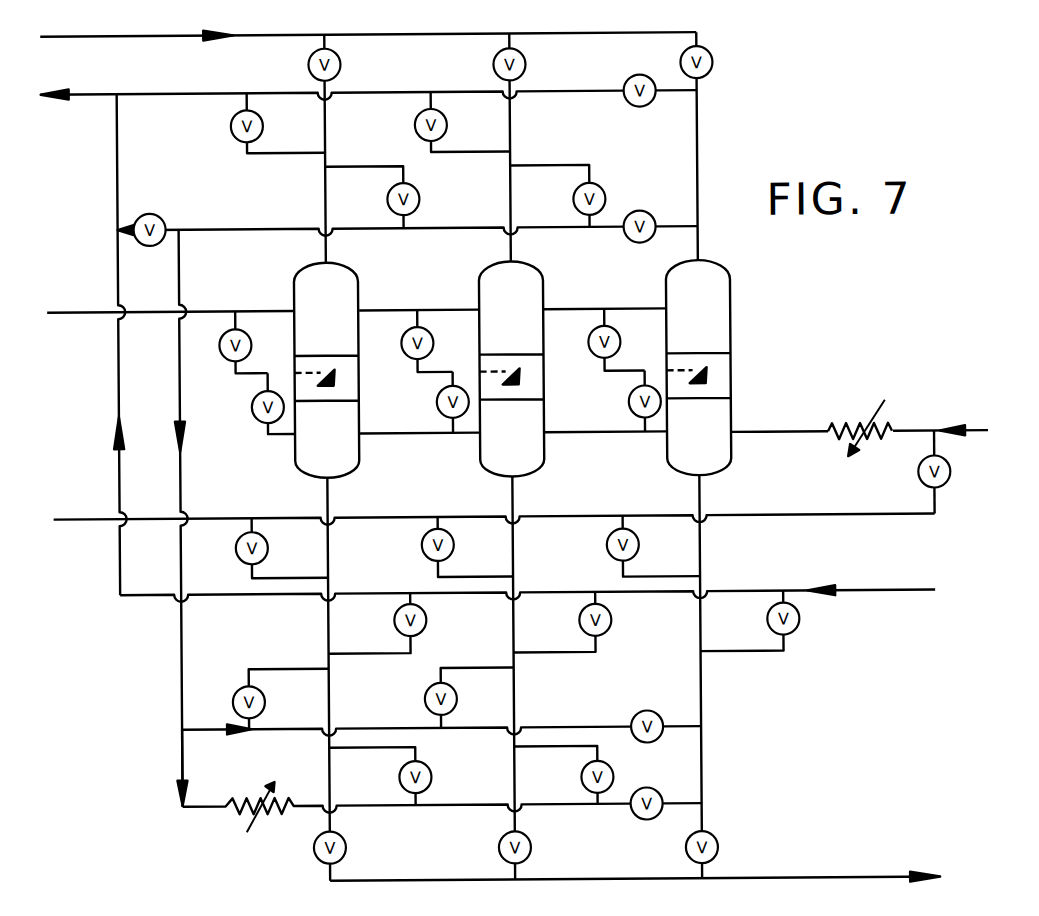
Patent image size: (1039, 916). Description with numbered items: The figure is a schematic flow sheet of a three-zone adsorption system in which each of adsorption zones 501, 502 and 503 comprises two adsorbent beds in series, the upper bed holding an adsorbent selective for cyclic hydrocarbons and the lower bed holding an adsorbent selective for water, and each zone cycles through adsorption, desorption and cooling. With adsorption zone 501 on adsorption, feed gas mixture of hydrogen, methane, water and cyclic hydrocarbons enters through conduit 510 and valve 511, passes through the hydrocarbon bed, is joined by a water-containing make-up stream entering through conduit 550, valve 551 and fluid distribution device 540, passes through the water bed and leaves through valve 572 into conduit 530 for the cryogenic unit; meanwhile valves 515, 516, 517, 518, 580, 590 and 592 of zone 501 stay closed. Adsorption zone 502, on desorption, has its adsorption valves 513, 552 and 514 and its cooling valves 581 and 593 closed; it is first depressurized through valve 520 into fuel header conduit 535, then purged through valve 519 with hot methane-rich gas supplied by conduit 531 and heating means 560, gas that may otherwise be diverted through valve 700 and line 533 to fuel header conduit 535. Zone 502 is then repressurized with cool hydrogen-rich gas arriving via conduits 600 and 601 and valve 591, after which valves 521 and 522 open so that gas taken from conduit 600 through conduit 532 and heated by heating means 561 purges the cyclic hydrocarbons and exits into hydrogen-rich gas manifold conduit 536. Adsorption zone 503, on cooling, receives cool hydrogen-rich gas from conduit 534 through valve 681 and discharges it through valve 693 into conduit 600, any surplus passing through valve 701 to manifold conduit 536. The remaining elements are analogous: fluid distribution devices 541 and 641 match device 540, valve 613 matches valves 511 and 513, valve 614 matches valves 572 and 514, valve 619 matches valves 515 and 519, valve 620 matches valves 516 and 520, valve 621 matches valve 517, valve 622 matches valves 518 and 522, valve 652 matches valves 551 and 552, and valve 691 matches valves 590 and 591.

The conduit 510 is at (185, 14).
The valve 511 is at (340, 62).
The valve 513 is at (525, 67).
The valve 613 is at (712, 66).
The hydrogen-rich gas manifold conduit 536 is at (82, 97).
The valve 518 is at (230, 128).
The valve 522 is at (414, 128).
The valve 622 is at (630, 105).
The conduit 600 is at (203, 229).
The valve 592 is at (418, 207).
The valve 593 is at (600, 188).
The valve 693 is at (646, 214).
The valve 701 is at (148, 247).
The adsorption zone 501 is at (286, 275).
The adsorption zone 502 is at (470, 282).
The adsorption zone 503 is at (654, 282).
The conduit 550 is at (82, 316).
The valve 551 is at (217, 348).
The valve 515 is at (250, 410).
The fluid distribution device 540 is at (330, 383).
The valve 552 is at (431, 350).
The fluid distribution device 541 is at (520, 376).
The valve 652 is at (592, 356).
The valve 519 is at (436, 408).
The valve 619 is at (627, 408).
The fluid distribution device 641 is at (708, 380).
The conduit 531 is at (914, 436).
The heating means 560 is at (826, 440).
The line 533 is at (934, 450).
The valve 700 is at (936, 494).
The fuel header conduit 535 is at (104, 524).
The valve 516 is at (278, 556).
The valve 520 is at (418, 549).
The valve 620 is at (606, 544).
The conduit 534 is at (869, 592).
The valve 580 is at (422, 627).
The valve 581 is at (608, 628).
The valve 681 is at (796, 624).
The valve 590 is at (232, 698).
The conduit 601 is at (206, 729).
The valve 591 is at (420, 701).
The valve 691 is at (642, 716).
The conduit 532 is at (176, 769).
The valve 517 is at (425, 785).
The valve 521 is at (576, 780).
The valve 621 is at (644, 794).
The heating means 561 is at (221, 812).
The valve 572 is at (356, 856).
The valve 514 is at (525, 852).
The valve 614 is at (712, 848).
The conduit 530 is at (830, 882).